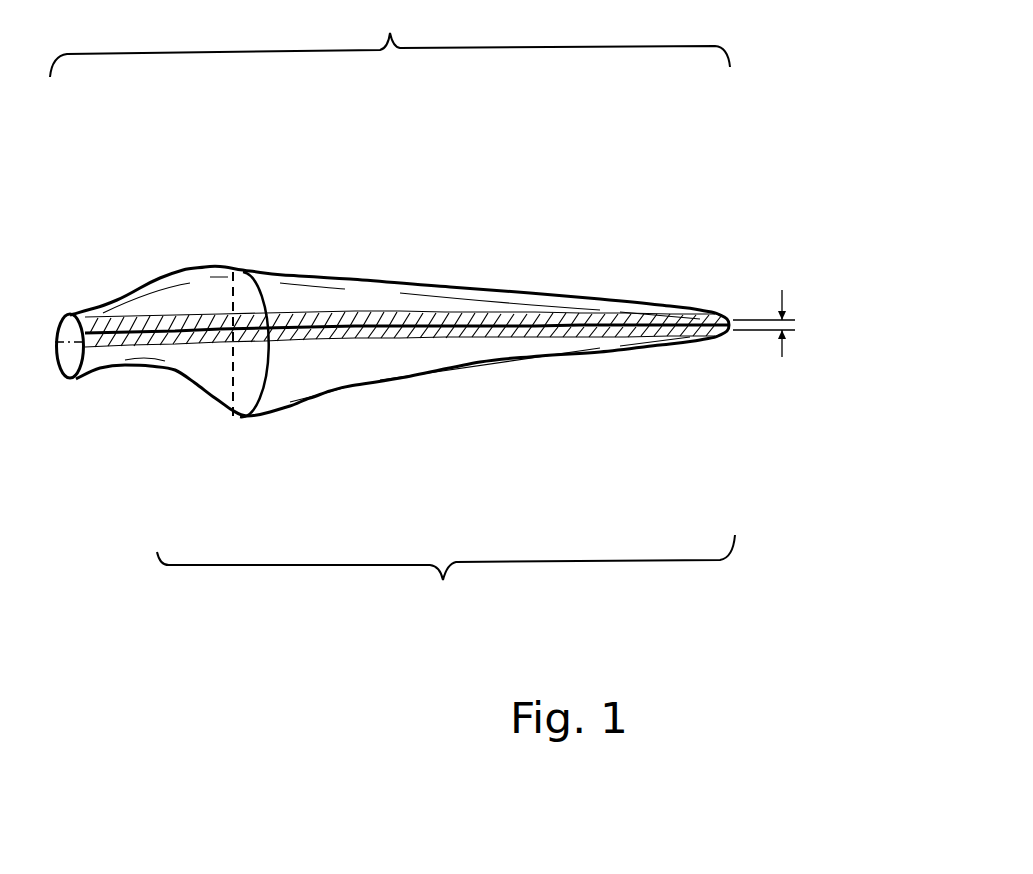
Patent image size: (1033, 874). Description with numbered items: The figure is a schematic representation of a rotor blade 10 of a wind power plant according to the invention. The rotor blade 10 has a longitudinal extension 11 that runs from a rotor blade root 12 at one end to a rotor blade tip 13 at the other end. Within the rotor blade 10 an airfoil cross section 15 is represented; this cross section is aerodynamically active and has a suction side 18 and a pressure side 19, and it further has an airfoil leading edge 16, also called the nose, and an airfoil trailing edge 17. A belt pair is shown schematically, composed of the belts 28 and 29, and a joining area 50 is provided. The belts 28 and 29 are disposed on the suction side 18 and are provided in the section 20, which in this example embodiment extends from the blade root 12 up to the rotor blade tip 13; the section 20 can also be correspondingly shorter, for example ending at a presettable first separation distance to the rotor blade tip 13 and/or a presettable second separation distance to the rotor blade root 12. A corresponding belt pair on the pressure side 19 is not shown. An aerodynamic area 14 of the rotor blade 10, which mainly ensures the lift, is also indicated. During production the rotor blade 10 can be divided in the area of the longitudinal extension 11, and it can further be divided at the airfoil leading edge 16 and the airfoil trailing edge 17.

The rotor blade 10 is at (368, 241).
The longitudinal extension 11 is at (195, 303).
The rotor blade root 12 is at (63, 378).
The rotor blade tip 13 is at (728, 320).
The aerodynamic area 14 is at (446, 575).
The airfoil cross section 15 is at (268, 295).
The airfoil leading edge 16 is at (247, 272).
The airfoil trailing edge 17 is at (234, 417).
The suction side 18 is at (280, 303).
The pressure side 19 is at (233, 360).
The section 20 is at (390, 39).
The belt 28 is at (510, 310).
The belt 29 is at (507, 337).
The joining area 50 is at (793, 325).